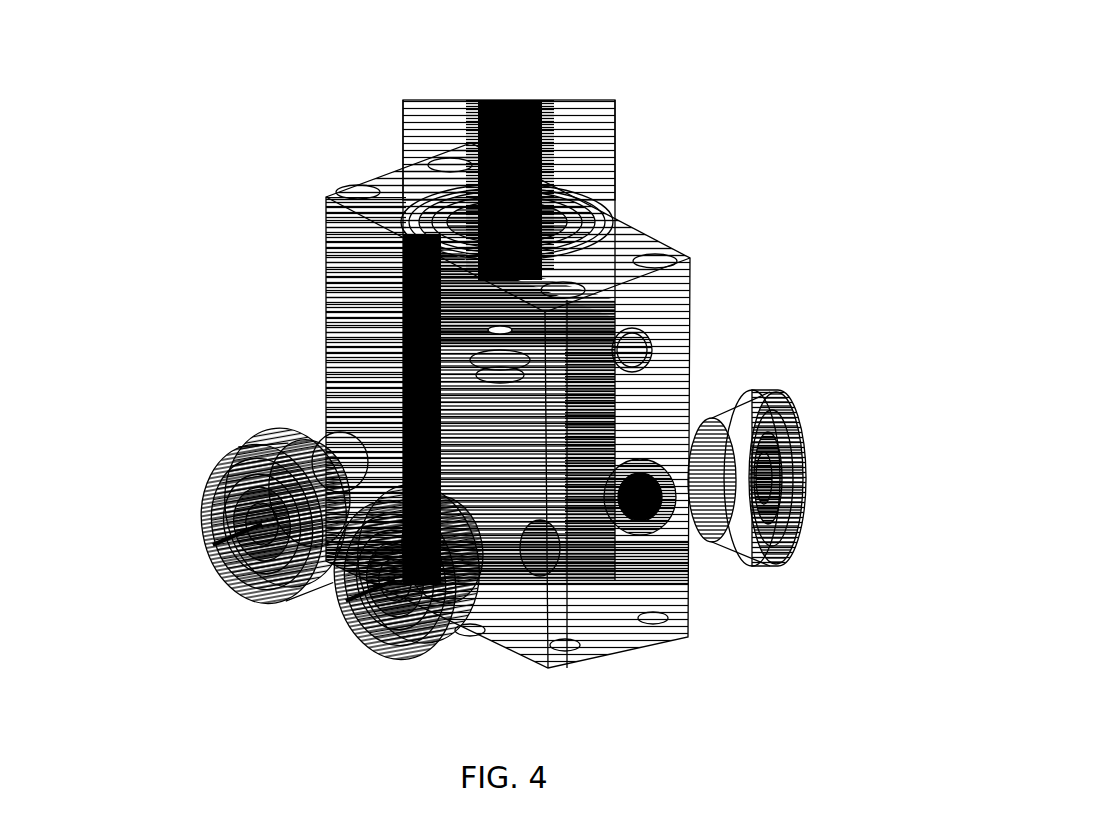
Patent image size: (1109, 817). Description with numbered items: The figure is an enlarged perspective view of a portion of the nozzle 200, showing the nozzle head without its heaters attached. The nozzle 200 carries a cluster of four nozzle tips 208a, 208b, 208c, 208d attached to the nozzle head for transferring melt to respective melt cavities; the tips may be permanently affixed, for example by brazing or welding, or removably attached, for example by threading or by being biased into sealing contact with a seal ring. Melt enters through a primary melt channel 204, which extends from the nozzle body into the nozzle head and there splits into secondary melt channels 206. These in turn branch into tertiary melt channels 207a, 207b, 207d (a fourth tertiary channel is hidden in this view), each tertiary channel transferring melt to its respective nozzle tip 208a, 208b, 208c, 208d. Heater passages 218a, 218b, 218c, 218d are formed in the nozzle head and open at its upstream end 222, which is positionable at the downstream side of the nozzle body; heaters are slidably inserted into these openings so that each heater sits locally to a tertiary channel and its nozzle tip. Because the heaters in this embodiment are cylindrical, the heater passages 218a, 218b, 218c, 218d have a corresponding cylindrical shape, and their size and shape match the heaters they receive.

The nozzle 200 is at (663, 50).
The primary melt channel 204 is at (530, 183).
The upstream end 222 is at (623, 242).
The heater passage 218a is at (352, 192).
The heater passage 218b is at (575, 289).
The heater passage 218c is at (445, 166).
The heater passage 218d is at (660, 263).
The secondary melt channels 206 is at (405, 345).
The tertiary melt channel 207a is at (340, 462).
The tertiary melt channel 207b is at (637, 530).
The tertiary melt channel 207d is at (415, 440).
The nozzle tip 208a is at (192, 503).
The nozzle tip 208b is at (332, 655).
The nozzle tip 208c is at (710, 360).
The nozzle tip 208d is at (815, 478).